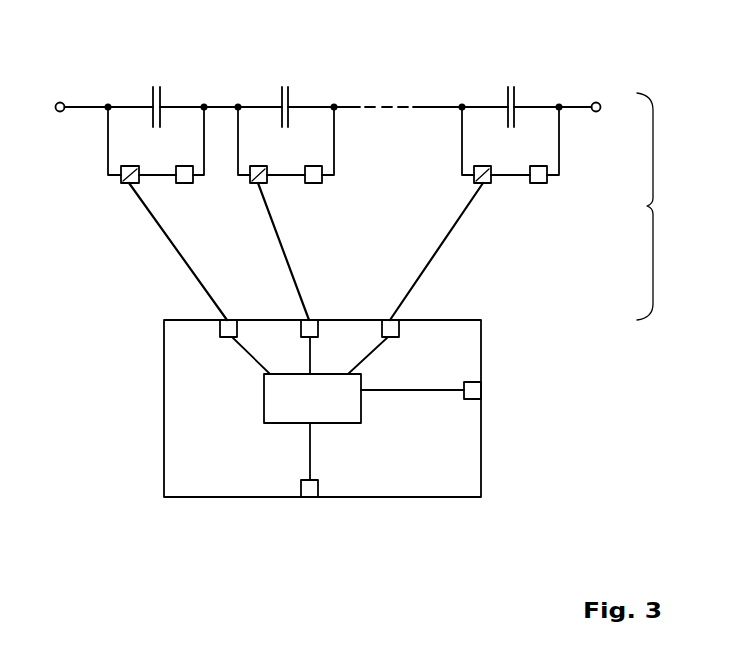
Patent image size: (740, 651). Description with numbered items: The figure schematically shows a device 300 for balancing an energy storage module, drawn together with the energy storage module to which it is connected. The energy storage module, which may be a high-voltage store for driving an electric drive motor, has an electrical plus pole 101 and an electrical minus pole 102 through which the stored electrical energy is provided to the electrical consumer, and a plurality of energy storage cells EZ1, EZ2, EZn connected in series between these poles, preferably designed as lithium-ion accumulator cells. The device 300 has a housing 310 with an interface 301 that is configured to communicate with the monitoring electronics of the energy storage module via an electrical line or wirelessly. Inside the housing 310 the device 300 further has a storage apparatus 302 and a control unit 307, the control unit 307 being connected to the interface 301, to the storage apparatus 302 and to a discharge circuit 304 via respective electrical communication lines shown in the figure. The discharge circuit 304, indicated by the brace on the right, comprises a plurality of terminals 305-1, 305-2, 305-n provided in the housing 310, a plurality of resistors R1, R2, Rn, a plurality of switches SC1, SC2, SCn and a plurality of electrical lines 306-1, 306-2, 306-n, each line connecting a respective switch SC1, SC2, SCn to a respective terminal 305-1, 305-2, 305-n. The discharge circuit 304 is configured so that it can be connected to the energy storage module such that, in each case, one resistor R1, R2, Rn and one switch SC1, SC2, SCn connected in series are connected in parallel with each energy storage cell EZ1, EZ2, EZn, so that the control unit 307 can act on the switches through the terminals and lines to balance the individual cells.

The electrical plus pole 101 is at (60, 112).
The electrical minus pole 102 is at (598, 112).
The energy storage cell EZ1 is at (160, 96).
The energy storage cell EZ2 is at (288, 96).
The energy storage cell EZn is at (514, 96).
The switch SC1 is at (122, 182).
The switch SC2 is at (253, 184).
The switch SCn is at (488, 184).
The resistor R1 is at (184, 184).
The resistor R2 is at (314, 184).
The resistor Rn is at (540, 184).
The electrical line 306-1 is at (174, 247).
The electrical line 306-2 is at (286, 257).
The electrical line 306-n is at (429, 264).
The terminal 305-1 is at (228, 320).
The terminal 305-2 is at (310, 320).
The terminal 305-n is at (388, 320).
The discharge circuit 304 is at (669, 206).
The housing 310 is at (482, 334).
The control unit 307 is at (264, 400).
The interface 301 is at (472, 388).
The storage apparatus 302 is at (310, 499).
The device 300 is at (576, 406).